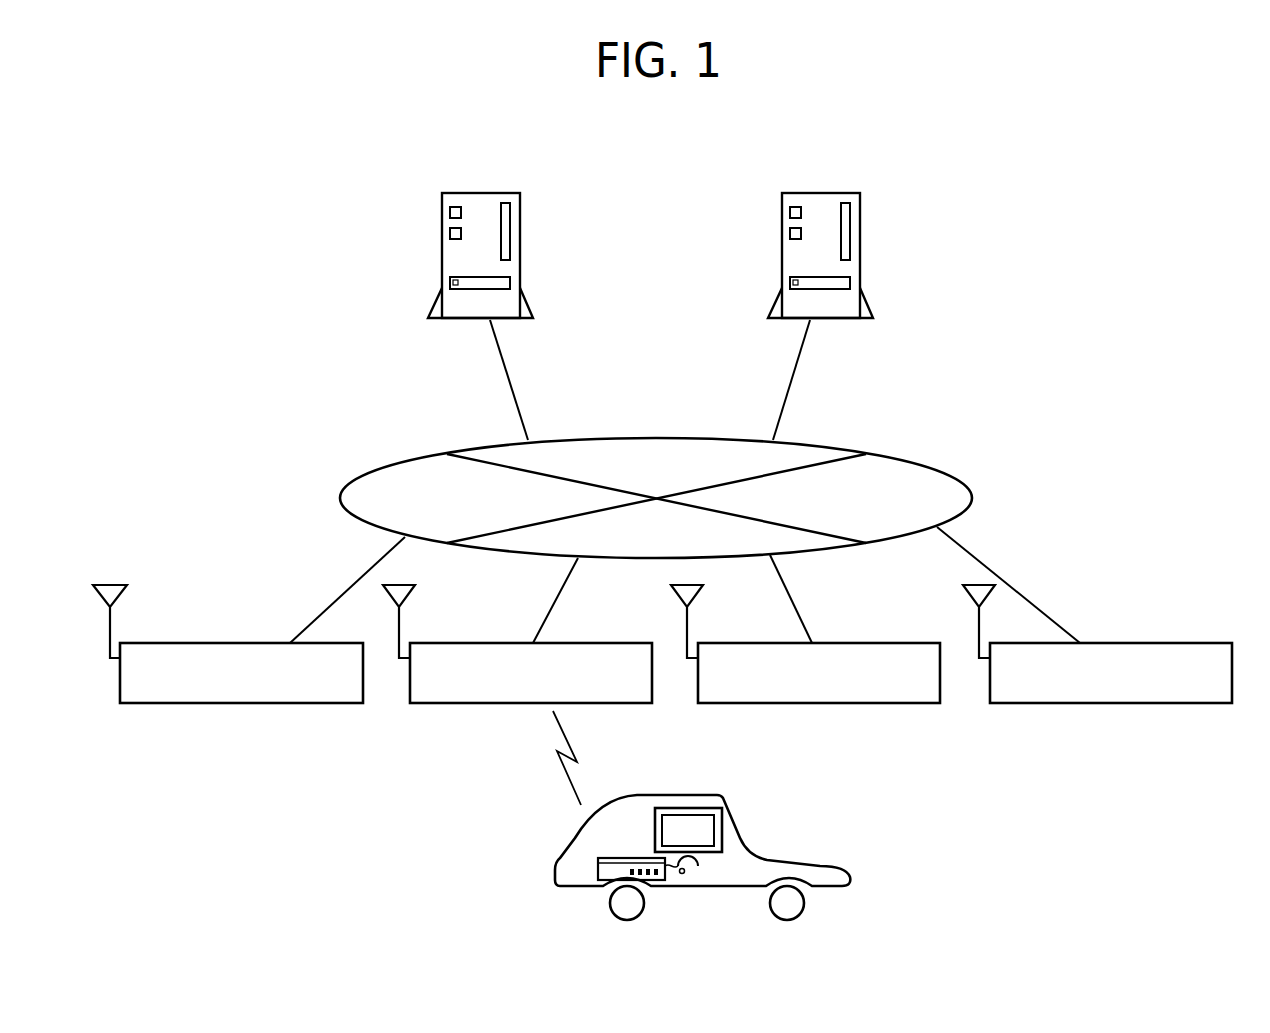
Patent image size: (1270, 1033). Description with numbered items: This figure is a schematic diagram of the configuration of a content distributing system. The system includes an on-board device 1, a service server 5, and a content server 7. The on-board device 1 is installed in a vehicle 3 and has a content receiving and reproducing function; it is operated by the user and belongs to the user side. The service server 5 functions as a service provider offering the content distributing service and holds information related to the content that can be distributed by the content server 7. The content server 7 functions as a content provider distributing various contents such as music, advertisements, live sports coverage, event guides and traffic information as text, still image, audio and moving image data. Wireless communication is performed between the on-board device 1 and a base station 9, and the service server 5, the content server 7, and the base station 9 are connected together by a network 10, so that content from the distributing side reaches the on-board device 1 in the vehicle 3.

The on-board device 1 is at (600, 858).
The vehicle 3 is at (743, 837).
The service server 5 is at (480, 192).
The content server 7 is at (820, 192).
The base station 9 is at (337, 704).
The network 10 is at (973, 497).